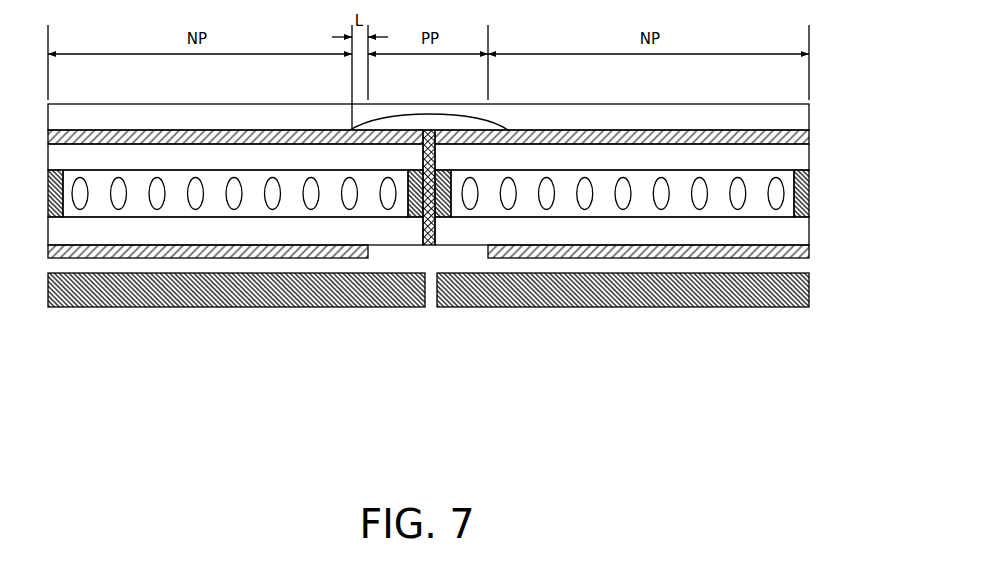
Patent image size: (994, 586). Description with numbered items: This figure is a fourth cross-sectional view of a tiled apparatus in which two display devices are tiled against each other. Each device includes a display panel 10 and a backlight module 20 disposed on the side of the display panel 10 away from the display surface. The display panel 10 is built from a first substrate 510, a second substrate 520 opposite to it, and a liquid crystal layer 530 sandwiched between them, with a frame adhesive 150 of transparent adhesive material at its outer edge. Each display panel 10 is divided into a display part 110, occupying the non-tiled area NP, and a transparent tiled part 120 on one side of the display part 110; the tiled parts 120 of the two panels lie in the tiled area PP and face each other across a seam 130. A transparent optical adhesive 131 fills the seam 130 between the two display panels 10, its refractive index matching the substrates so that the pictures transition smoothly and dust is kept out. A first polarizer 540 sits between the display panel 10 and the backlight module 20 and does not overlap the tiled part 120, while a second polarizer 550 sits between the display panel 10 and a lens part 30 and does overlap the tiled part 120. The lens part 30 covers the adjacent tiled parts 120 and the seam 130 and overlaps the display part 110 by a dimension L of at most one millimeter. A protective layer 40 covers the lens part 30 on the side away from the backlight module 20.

The display panel 10 is at (893, 148).
The backlight module 20 is at (101, 288).
The lens part 30 is at (462, 125).
The protective layer 40 is at (792, 119).
The display part 110 is at (48, 378).
The tiled part 120 is at (422, 378).
The seam 130 is at (436, 378).
The transparent optical adhesive 131 is at (428, 129).
The frame adhesive 150 is at (55, 193).
The first substrate 510 is at (793, 233).
The second substrate 520 is at (792, 164).
The liquid crystal layer 530 is at (817, 170).
The first polarizer 540 is at (793, 252).
The second polarizer 550 is at (792, 133).